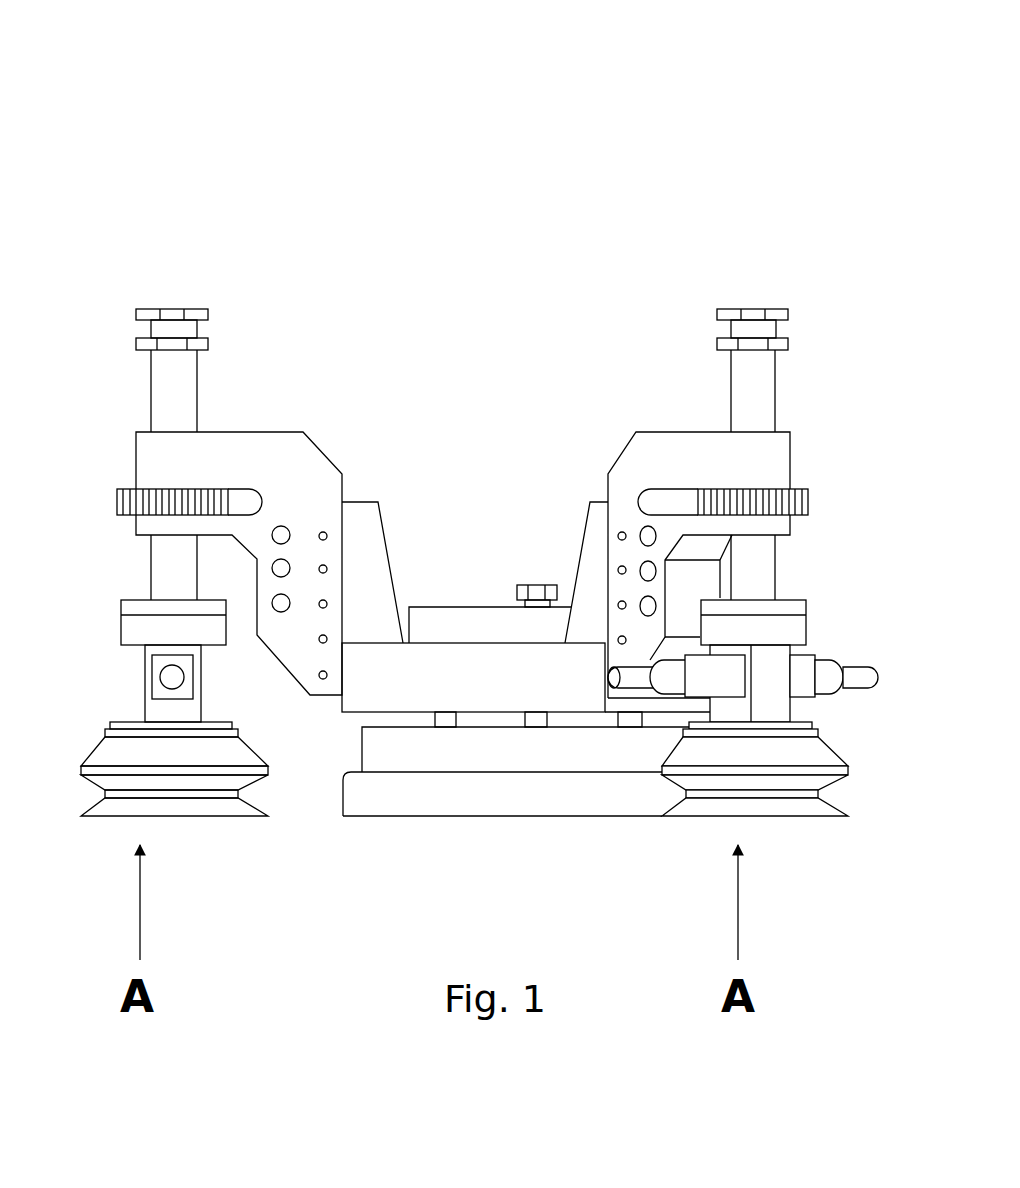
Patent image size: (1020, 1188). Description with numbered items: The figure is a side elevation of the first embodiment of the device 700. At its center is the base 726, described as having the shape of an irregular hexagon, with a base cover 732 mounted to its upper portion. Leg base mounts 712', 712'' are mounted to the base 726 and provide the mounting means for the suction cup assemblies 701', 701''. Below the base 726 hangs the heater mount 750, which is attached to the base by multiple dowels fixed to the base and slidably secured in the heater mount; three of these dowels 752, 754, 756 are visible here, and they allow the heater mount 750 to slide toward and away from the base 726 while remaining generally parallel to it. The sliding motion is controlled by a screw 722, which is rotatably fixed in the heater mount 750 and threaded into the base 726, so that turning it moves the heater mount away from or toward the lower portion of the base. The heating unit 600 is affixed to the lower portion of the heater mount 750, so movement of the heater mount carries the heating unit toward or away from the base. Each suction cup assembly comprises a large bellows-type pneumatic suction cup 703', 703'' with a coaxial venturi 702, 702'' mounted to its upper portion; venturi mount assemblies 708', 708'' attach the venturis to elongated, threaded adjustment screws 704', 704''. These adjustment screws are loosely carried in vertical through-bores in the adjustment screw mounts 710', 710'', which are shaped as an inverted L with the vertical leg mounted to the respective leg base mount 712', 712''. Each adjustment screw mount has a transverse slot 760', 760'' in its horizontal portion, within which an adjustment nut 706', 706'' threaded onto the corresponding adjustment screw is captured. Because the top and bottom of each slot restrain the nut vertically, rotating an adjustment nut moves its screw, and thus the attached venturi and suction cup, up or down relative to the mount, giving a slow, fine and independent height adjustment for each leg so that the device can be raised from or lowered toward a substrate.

The device 700 is at (340, 155).
The heating unit 600 is at (358, 838).
The suction cup assembly 701' is at (182, 554).
The suction cup assembly 701'' is at (751, 531).
The coaxial venturi 702 is at (768, 617).
The coaxial venturi 702'' is at (774, 718).
The bellows-type pneumatic suction cup 703' is at (174, 828).
The bellows-type pneumatic suction cup 703'' is at (760, 817).
The adjustment screw 704' is at (125, 454).
The adjustment screw 704'' is at (807, 454).
The adjustment nut 706' is at (121, 481).
The adjustment nut 706'' is at (790, 455).
The venturi mount assembly 708' is at (134, 614).
The venturi mount assembly 708'' is at (789, 606).
The adjustment screw mount 710' is at (239, 491).
The adjustment screw mount 710'' is at (699, 514).
The leg base mount 712' is at (357, 487).
The leg base mount 712'' is at (550, 441).
The screw 722 is at (535, 583).
The base 726 is at (462, 667).
The base cover 732 is at (482, 622).
The heater mount 750 is at (397, 750).
The dowel 752 is at (445, 722).
The dowel 754 is at (535, 722).
The dowel 756 is at (632, 722).
The transverse slot 760' is at (289, 366).
The transverse slot 760'' is at (630, 333).